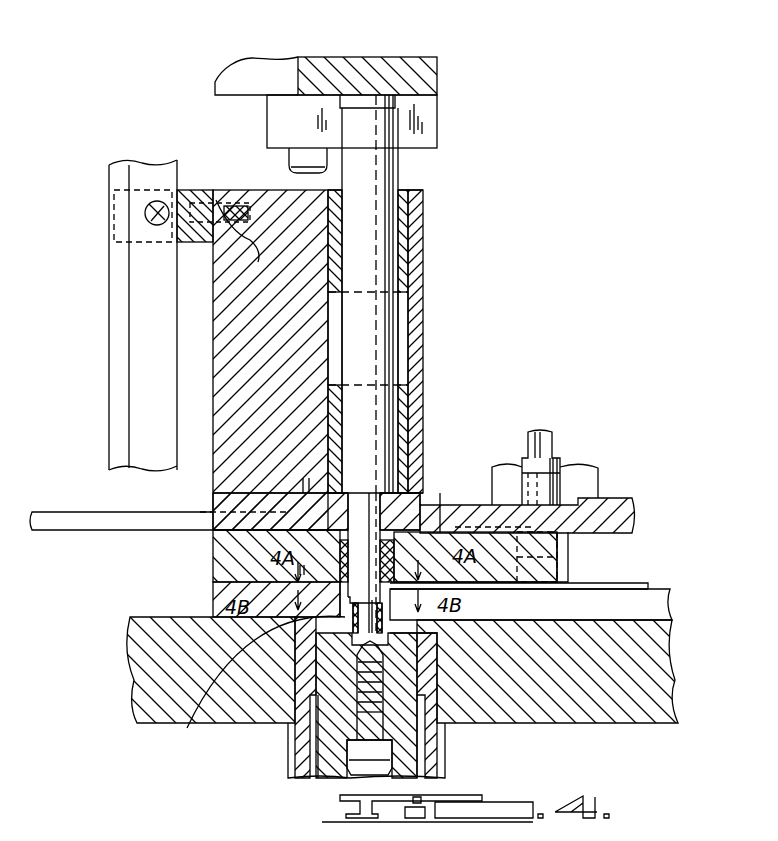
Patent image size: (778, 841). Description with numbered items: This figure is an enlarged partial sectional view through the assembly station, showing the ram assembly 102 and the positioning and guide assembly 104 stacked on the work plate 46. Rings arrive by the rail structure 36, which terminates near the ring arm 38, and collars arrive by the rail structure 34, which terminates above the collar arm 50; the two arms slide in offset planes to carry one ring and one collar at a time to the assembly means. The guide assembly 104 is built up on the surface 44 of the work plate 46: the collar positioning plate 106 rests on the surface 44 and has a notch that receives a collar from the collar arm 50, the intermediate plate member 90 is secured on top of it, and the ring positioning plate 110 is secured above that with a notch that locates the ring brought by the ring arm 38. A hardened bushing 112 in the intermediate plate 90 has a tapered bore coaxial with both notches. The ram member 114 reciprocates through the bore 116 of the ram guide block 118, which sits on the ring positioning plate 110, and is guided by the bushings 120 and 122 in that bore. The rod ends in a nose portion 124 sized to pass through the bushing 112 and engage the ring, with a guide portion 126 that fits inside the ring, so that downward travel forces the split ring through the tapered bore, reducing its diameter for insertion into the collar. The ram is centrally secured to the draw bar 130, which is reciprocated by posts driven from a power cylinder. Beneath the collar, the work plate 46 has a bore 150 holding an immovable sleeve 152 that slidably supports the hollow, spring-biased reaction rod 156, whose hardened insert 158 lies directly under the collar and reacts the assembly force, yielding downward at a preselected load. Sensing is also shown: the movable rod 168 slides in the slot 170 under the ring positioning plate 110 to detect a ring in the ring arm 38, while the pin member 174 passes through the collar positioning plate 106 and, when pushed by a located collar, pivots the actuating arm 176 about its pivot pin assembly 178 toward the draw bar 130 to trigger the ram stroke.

The ram assembly 102 is at (375, 115).
The draw bar 130 is at (430, 117).
The ram guide block 118 is at (420, 193).
The bore 116 is at (403, 216).
The bushing 120 is at (400, 241).
The positioning and guide assembly 104 is at (413, 326).
The ram member 114 is at (387, 335).
The bushing 122 is at (405, 421).
The nose portion 124 is at (409, 294).
The ring arm 38 is at (459, 524).
The rail structure 34 is at (600, 482).
The rail structure 36 is at (545, 432).
The slot 170 is at (302, 492).
The ring positioning plate 110 is at (213, 496).
The movable rod 168 is at (92, 540).
The intermediate plate member 90 is at (213, 562).
The collar positioning plate 106 is at (213, 596).
The hardened bushing 112 is at (388, 563).
The guide portion 126 is at (348, 612).
The collar arm 50 is at (648, 588).
The surface 44 is at (668, 605).
The work plate 46 is at (675, 648).
The immovable sleeve 152 is at (300, 770).
The bore 150 is at (322, 662).
The reaction rod 156 is at (332, 772).
The hardened insert 158 is at (390, 678).
The pin member 174 is at (247, 686).
The actuating arm 176 is at (112, 352).
The pivot pin assembly 178 is at (150, 216).